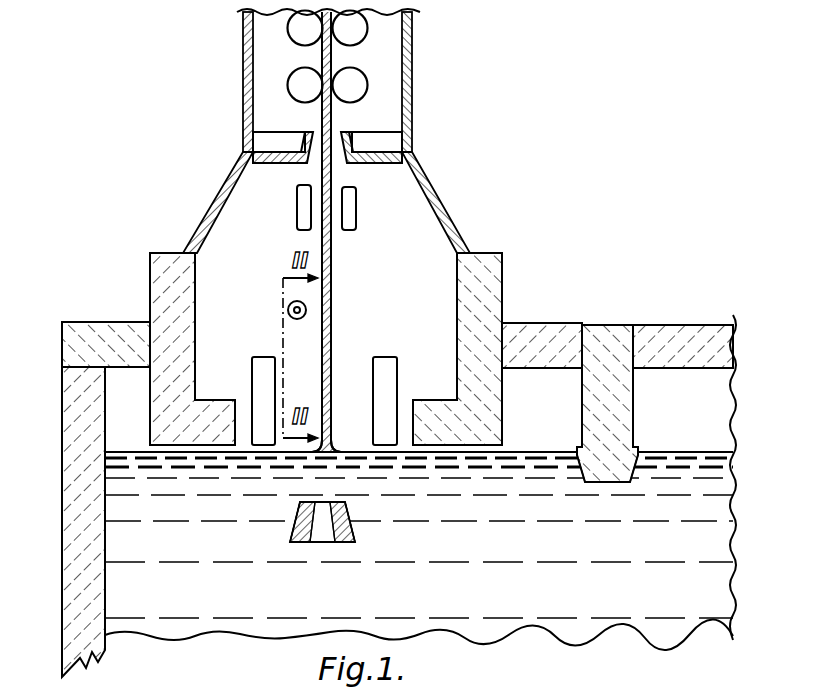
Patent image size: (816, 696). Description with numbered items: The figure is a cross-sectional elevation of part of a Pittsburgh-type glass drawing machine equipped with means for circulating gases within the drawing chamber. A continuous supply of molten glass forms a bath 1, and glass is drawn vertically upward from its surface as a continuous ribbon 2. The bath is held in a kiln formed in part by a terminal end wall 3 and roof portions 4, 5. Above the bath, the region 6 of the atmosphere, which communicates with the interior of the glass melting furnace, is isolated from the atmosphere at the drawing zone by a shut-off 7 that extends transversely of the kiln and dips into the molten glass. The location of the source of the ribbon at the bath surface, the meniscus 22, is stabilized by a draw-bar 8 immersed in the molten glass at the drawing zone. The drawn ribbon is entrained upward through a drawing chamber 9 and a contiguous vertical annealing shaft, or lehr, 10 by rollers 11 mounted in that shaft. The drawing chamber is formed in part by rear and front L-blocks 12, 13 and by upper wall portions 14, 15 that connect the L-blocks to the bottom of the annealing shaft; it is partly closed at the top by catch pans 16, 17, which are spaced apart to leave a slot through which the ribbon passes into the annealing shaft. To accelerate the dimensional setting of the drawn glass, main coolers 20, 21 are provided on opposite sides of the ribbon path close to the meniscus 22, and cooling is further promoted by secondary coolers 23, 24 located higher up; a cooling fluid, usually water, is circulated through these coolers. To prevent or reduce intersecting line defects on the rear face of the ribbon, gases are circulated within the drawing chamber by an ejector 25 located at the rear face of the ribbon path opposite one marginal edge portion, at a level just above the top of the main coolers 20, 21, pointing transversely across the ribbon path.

The bath 1 is at (318, 610).
The ribbon 2 is at (333, 310).
The terminal end wall 3 is at (72, 430).
The roof portion 4 is at (118, 342).
The roof portion 5 is at (535, 347).
The region 6 is at (693, 413).
The shut-off 7 is at (598, 357).
The draw-bar 8 is at (348, 508).
The drawing chamber 9 is at (403, 266).
The annealing shaft 10 is at (394, 68).
The rollers 11 is at (303, 83).
The rear L-block 12 is at (175, 270).
The front L-block 13 is at (480, 270).
The upper wall portion 14 is at (225, 208).
The upper wall portion 15 is at (427, 180).
The catch pan 16 is at (285, 145).
The catch pan 17 is at (363, 147).
The main cooler 20 is at (262, 385).
The main cooler 21 is at (385, 385).
The meniscus 22 is at (331, 449).
The secondary cooler 23 is at (305, 197).
The secondary cooler 24 is at (348, 197).
The ejector 25 is at (289, 306).